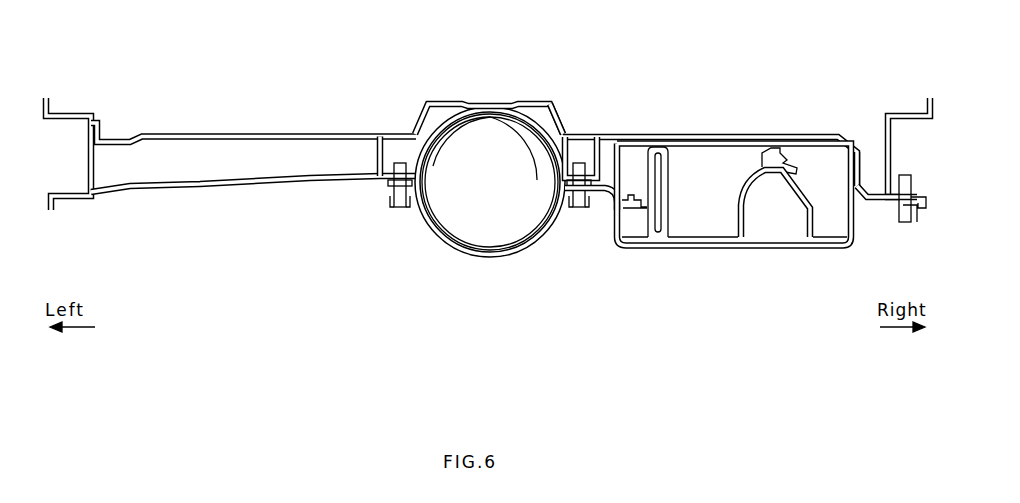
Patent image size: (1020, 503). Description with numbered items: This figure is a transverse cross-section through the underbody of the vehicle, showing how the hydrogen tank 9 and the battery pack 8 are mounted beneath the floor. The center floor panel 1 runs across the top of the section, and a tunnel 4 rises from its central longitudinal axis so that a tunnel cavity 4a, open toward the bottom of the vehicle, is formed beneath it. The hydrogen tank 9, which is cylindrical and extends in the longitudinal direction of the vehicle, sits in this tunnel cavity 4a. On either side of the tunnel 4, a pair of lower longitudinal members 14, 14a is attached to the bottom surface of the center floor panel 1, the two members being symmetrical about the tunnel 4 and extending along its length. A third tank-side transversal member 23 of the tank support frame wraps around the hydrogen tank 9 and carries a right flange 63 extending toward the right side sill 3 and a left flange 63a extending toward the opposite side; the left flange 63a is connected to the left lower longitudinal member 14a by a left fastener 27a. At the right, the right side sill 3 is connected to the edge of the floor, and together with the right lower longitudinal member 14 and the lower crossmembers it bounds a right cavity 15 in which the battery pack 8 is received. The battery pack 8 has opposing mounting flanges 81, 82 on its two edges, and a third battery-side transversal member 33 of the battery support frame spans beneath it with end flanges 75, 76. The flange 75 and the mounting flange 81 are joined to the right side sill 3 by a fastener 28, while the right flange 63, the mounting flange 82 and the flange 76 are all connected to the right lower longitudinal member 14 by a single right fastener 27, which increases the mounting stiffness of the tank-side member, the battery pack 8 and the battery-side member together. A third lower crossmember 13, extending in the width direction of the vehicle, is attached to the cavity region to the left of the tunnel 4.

The center floor panel 1 is at (240, 133).
The side sill 3 is at (88, 163).
The tunnel 4 is at (568, 132).
The tunnel cavity 4a is at (537, 108).
The battery pack 8 is at (680, 249).
The hydrogen tank 9 is at (446, 110).
The third lower crossmember 13 is at (219, 187).
The lower longitudinal member 14 is at (598, 162).
The lower longitudinal member 14a is at (380, 150).
The cavity 15 is at (868, 190).
The third tank-side transversal member 23 is at (470, 252).
The fastener 27 is at (575, 209).
The fastener 27a is at (393, 209).
The fastener 28 is at (910, 223).
The third battery-side transversal member 33 is at (750, 249).
The right flange 63 is at (537, 180).
The left flange 63a is at (433, 166).
The flange 75 is at (878, 215).
The flange 76 is at (600, 191).
The mounting flange 81 is at (875, 162).
The mounting flange 82 is at (600, 187).